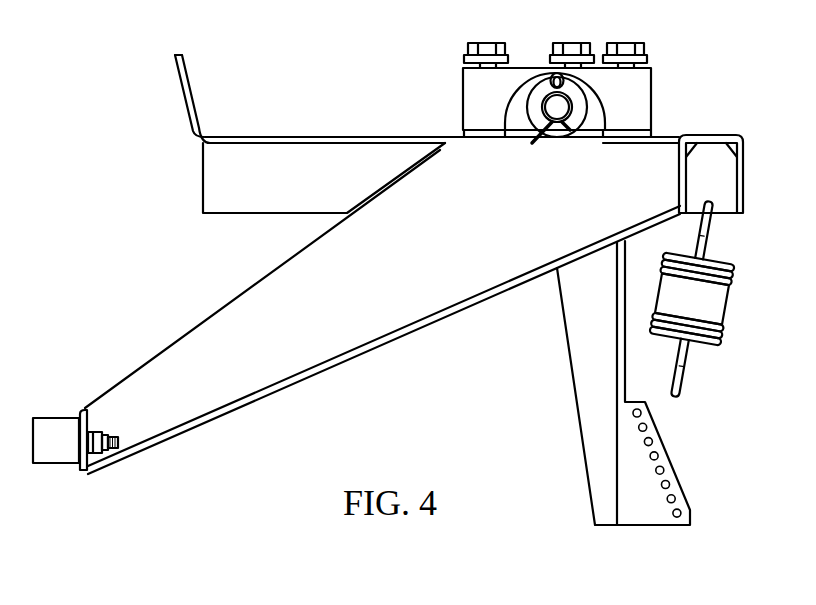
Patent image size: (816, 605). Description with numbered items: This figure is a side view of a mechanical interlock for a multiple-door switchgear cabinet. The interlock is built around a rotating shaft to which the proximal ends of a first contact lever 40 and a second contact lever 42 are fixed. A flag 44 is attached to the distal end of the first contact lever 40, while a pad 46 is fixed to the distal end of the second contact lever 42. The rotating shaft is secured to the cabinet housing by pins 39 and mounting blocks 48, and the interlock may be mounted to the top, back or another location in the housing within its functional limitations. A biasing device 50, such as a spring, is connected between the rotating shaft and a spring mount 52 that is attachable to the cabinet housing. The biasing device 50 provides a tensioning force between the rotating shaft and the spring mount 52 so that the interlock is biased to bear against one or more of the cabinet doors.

The pins 39 is at (563, 107).
The first contact lever 40 is at (307, 158).
The second contact lever 42 is at (367, 327).
The flag 44 is at (177, 70).
The pad 46 is at (55, 433).
The mounting blocks 48 is at (477, 90).
The biasing device 50 is at (731, 300).
The spring mount 52 is at (653, 500).